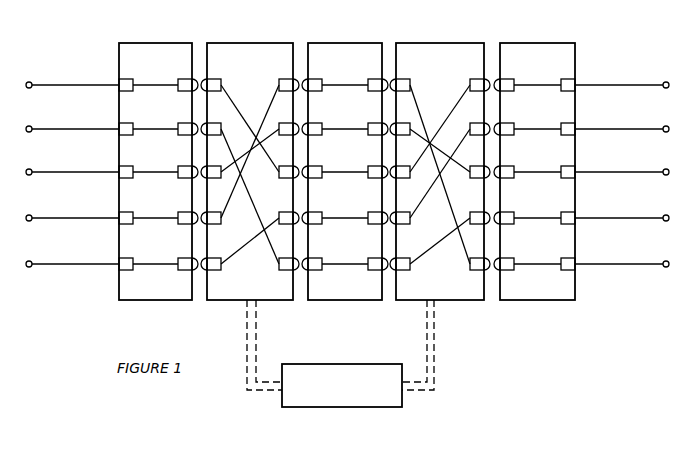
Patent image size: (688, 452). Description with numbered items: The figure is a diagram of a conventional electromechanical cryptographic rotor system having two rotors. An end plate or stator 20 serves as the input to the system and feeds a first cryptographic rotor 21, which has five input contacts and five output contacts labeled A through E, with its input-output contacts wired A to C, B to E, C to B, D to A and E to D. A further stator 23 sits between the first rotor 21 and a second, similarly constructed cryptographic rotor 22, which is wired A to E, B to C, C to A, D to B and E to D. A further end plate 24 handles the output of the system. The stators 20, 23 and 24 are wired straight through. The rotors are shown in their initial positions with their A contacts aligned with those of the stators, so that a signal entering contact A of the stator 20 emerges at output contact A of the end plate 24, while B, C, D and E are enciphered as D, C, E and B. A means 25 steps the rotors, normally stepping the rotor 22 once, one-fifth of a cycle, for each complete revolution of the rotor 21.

The end plate or stator 20 is at (143, 42).
The cryptographic rotor 21 is at (243, 42).
The stator 23 is at (337, 42).
The cryptographic rotor 22 is at (435, 42).
The end plate 24 is at (530, 42).
The rotor stepping means 25 is at (382, 411).